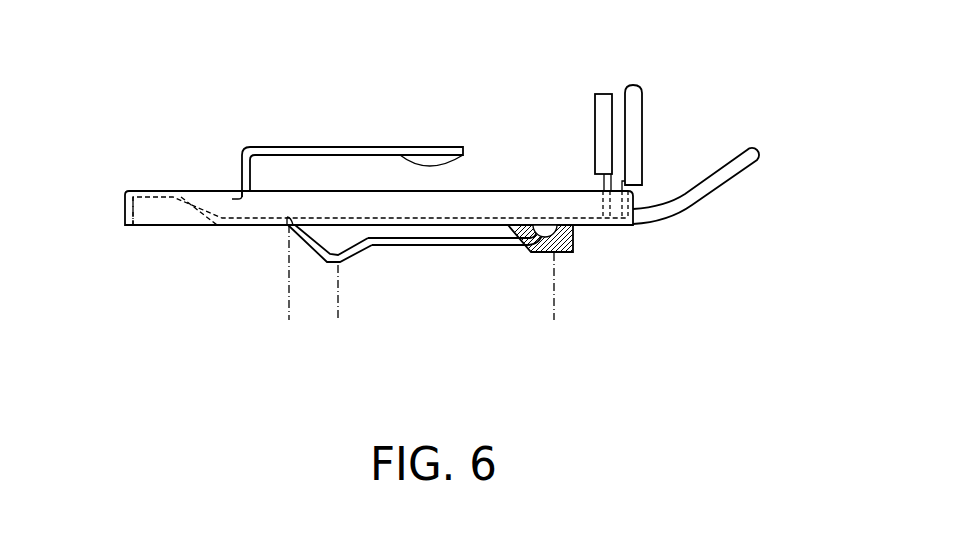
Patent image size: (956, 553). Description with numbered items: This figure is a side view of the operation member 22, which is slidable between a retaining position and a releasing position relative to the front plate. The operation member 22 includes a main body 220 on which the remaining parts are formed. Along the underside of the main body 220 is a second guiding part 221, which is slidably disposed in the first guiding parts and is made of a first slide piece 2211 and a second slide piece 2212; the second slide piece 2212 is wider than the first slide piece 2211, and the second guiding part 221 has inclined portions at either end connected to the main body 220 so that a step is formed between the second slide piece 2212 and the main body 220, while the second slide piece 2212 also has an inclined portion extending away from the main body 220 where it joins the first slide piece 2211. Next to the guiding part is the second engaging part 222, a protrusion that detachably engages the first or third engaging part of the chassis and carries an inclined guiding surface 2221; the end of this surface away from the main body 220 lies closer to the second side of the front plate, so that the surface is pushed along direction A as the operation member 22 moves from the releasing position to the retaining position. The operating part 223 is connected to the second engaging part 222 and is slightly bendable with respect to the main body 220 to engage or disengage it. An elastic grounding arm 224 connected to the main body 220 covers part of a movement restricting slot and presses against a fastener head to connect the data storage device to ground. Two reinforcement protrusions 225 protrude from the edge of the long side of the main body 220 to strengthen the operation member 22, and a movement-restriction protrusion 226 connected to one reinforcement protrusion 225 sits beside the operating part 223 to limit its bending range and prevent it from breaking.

The operation member 22 is at (207, 49).
The main body 220 is at (142, 207).
The second guiding part 221 is at (413, 317).
The first slide piece 2211 is at (338, 318).
The second slide piece 2212 is at (446, 297).
The second engaging part 222 is at (552, 205).
The inclined guiding surface 2221 is at (499, 233).
The operating part 223 is at (729, 177).
The elastic grounding arm 224 is at (343, 152).
The reinforcement protrusion 225 is at (613, 120).
The movement-restriction protrusion 226 is at (593, 123).